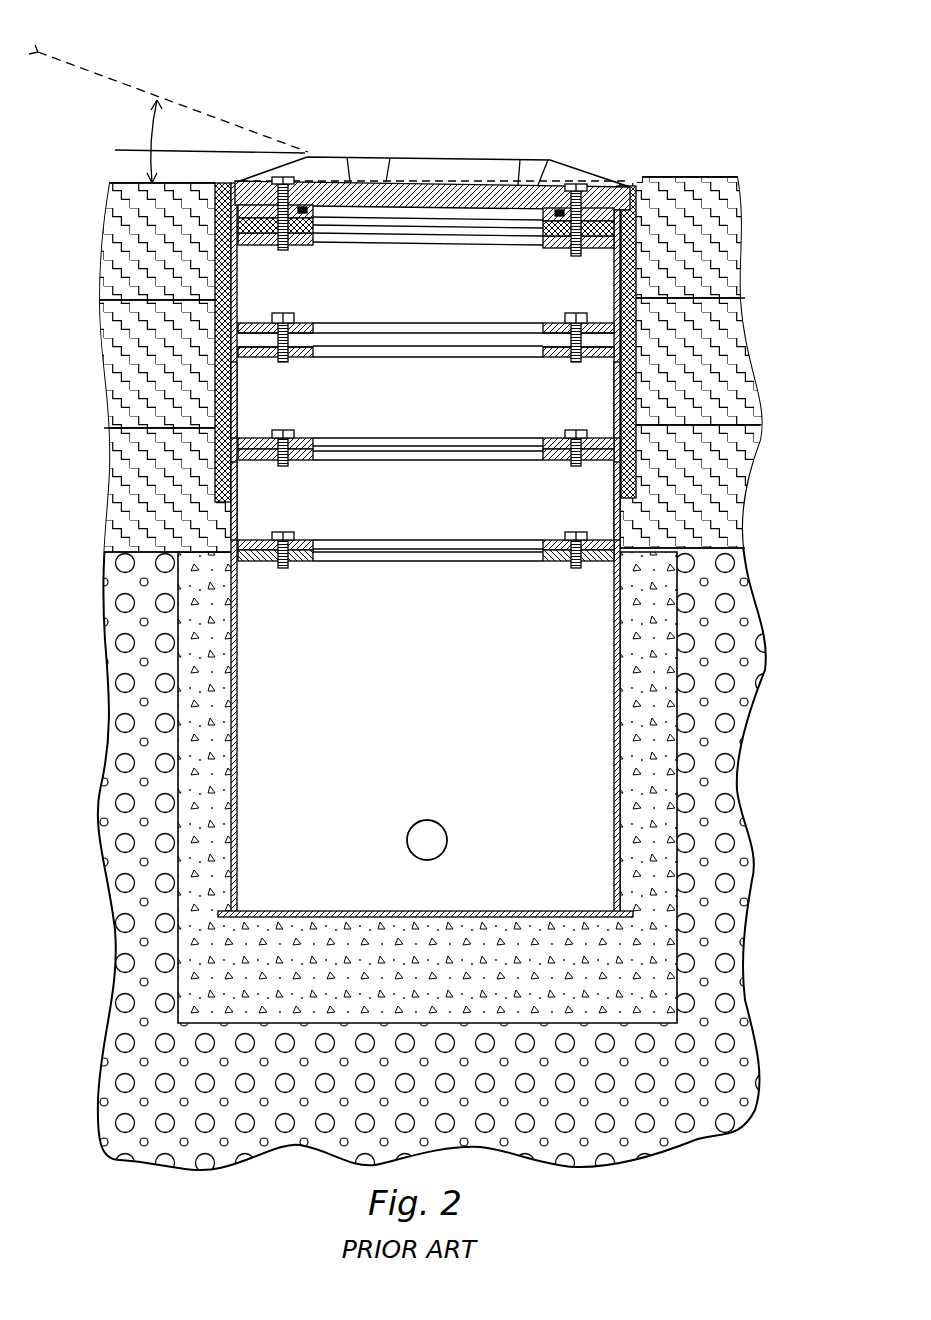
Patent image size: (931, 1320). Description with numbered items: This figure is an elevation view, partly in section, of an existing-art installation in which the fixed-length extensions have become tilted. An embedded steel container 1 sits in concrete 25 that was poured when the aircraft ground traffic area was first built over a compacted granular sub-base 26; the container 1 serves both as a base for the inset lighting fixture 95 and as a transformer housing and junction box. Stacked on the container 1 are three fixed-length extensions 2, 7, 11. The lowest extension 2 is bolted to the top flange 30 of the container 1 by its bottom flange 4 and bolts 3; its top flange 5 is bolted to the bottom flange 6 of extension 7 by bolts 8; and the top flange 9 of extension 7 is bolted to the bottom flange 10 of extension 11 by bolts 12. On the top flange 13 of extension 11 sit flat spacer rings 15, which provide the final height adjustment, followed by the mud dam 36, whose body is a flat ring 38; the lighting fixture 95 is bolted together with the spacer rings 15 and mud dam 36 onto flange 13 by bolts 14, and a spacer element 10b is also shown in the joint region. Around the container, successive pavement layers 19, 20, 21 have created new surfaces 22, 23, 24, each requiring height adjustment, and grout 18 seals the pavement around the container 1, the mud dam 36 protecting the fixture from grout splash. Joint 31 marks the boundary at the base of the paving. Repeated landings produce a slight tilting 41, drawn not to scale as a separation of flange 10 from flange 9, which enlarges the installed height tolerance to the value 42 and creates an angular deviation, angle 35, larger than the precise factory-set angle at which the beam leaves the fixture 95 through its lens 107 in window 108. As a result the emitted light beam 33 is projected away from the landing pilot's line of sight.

The container 1 is at (238, 832).
The fixed-length extension 2 is at (238, 510).
The bolts 3 is at (280, 570).
The bottom flange 4 is at (300, 540).
The top flange 5 is at (300, 460).
The bottom flange 6 is at (300, 436).
The fixed-length extension 7 is at (238, 410).
The bolts 8 is at (282, 468).
The top flange 9 is at (300, 355).
The bottom flange 10 is at (300, 323).
The spacer block 10b is at (372, 208).
The fixed-length extension 11 is at (237, 312).
The bolts 12 is at (280, 362).
The top flange 13 is at (300, 242).
The bolts 14 is at (283, 250).
The flat spacer rings 15 is at (555, 240).
The grout 18 is at (222, 190).
The pavement layer 19 is at (108, 495).
The pavement layer 20 is at (100, 375).
The pavement layer 21 is at (100, 262).
The surface 22 is at (115, 428).
The surface 23 is at (110, 305).
The surface 24 is at (110, 198).
The concrete 25 is at (185, 715).
The compacted granular sub-base 26 is at (110, 810).
The top flange 30 is at (300, 565).
The mortar joint 31 is at (135, 550).
The emitted light beam 33 is at (152, 95).
The angle 35 is at (150, 125).
The mud dam 36 is at (626, 185).
The flat ring 38 is at (560, 228).
The tilting 41 is at (240, 338).
The enlarged installed height tolerance 42 is at (105, 160).
The inset lighting fixture 95 is at (415, 157).
The lens 107 is at (395, 178).
The window 108 is at (330, 178).